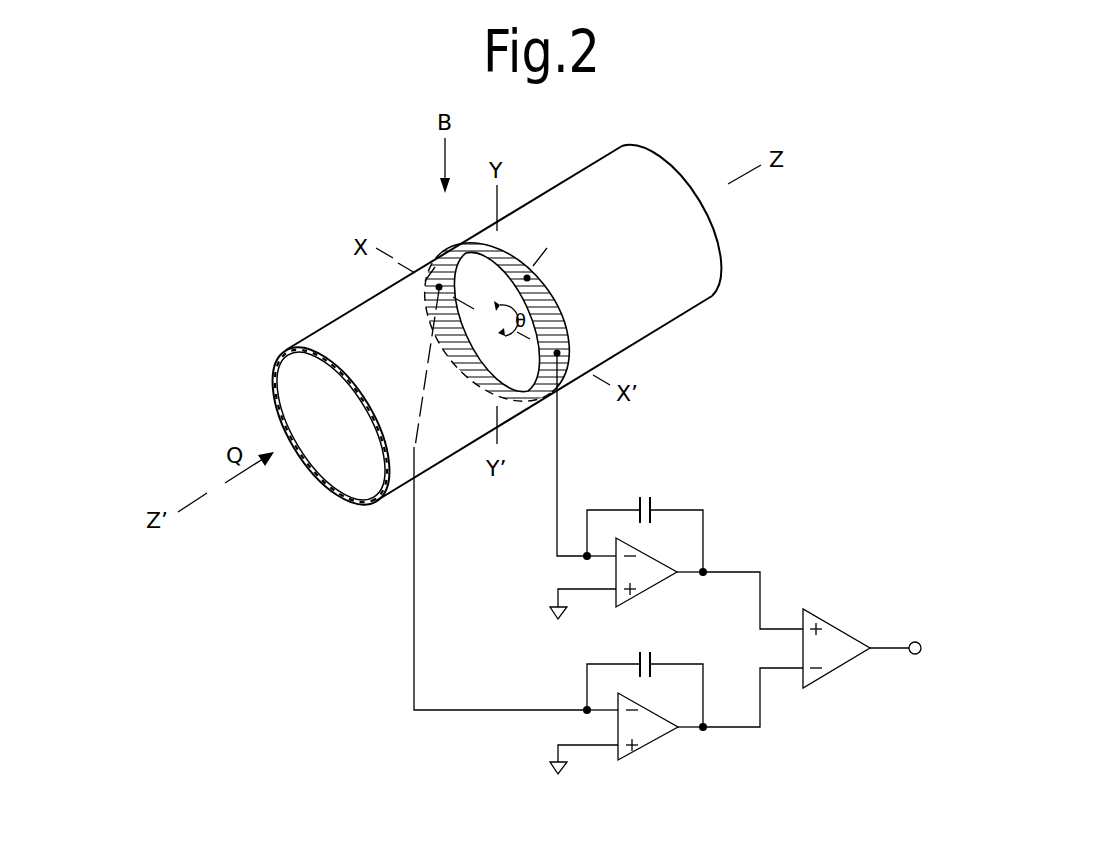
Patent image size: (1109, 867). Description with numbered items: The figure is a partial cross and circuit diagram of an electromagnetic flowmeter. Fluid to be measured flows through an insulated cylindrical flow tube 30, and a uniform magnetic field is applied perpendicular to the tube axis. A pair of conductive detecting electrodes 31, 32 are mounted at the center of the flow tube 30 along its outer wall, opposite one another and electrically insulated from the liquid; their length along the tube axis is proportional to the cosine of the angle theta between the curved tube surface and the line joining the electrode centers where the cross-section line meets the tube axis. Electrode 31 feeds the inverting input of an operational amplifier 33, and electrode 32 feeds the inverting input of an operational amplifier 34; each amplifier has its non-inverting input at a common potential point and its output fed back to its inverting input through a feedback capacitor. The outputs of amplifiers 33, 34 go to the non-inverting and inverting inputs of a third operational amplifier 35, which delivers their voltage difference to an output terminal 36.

The flow tube 30 is at (594, 167).
The detecting electrode 31 is at (560, 317).
The detecting electrode 32 is at (433, 313).
The operational amplifier 33 is at (655, 566).
The operational amplifier 34 is at (655, 737).
The third operational amplifier 35 is at (840, 635).
The output terminal 36 is at (910, 657).